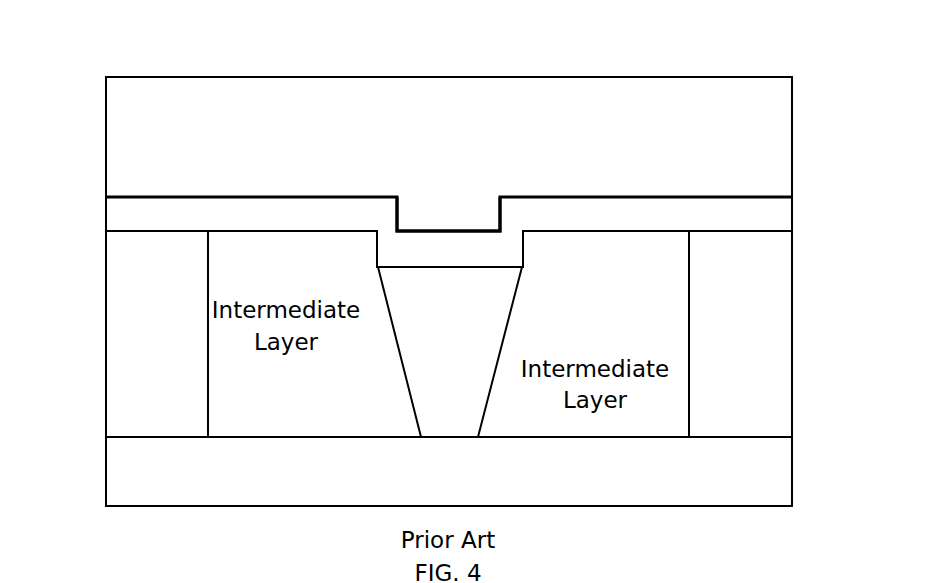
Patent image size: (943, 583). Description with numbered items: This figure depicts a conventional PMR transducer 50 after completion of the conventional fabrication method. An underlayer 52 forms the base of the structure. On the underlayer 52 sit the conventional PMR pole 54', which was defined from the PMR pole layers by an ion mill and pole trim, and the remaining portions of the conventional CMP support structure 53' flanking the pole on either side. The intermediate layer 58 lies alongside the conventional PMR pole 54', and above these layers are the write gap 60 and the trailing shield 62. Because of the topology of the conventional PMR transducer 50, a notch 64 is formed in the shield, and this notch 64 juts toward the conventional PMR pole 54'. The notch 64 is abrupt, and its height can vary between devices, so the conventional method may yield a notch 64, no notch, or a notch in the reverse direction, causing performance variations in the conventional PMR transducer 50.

The conventional PMR transducer 50 is at (433, 39).
The underlayer 52 is at (792, 475).
The conventional CMP support structure 53' is at (449, 328).
The conventional PMR pole 54' is at (292, 352).
The intermediate layer 58 is at (243, 231).
The write gap 60 is at (792, 213).
The trailing shield 62 is at (106, 142).
The notch 64 is at (550, 208).